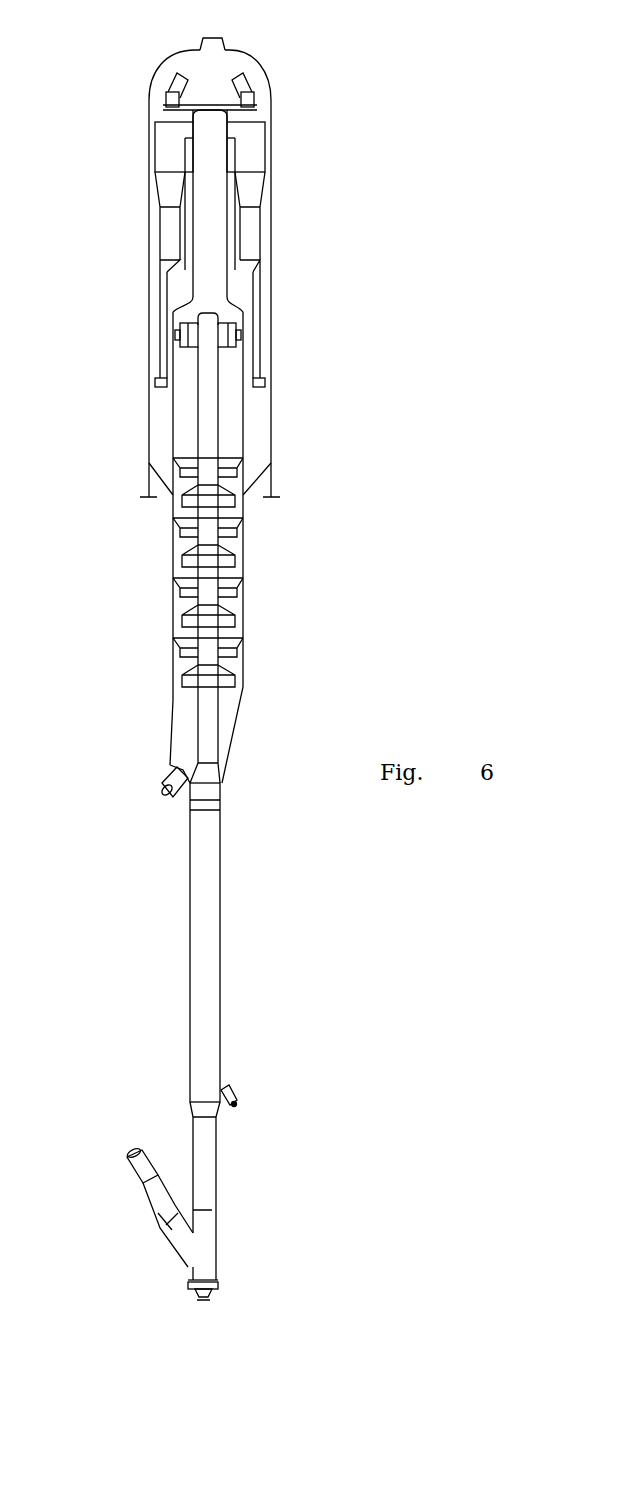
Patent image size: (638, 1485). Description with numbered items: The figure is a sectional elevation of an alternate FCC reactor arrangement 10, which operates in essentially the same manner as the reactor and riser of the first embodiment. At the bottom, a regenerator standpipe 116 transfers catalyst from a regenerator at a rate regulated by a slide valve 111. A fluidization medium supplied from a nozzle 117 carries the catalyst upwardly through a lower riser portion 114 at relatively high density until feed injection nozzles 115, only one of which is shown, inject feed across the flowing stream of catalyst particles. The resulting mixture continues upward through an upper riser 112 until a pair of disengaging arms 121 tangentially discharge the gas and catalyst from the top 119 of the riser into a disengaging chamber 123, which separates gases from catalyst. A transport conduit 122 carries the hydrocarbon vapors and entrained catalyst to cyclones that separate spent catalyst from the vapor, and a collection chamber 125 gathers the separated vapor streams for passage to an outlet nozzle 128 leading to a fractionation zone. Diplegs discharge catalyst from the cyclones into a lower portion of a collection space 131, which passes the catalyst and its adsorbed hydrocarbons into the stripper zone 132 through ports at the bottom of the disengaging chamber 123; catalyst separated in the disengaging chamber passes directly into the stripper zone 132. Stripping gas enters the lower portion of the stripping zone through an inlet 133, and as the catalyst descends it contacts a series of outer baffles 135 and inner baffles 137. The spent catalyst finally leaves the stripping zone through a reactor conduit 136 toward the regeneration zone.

The reactor arrangement 10 is at (307, 348).
The slide valve 111 is at (160, 1213).
The upper riser 112 is at (222, 895).
The lower riser portion 114 is at (218, 1165).
The feed injection nozzles 115 is at (227, 1090).
The regenerator standpipe 116 is at (130, 1172).
The nozzle 117 is at (220, 1298).
The top of the riser 119 is at (210, 327).
The disengaging arms 121 is at (230, 350).
The transport conduit 122 is at (237, 228).
The disengaging chamber 123 is at (247, 438).
The collection chamber 125 is at (205, 67).
The outlet nozzle 128 is at (228, 42).
The collection space 131 is at (158, 418).
The stripper zone 132 is at (250, 567).
The inlet 133 is at (235, 657).
The outer baffles 135 is at (180, 522).
The reactor conduit 136 is at (157, 780).
The inner baffles 137 is at (185, 608).